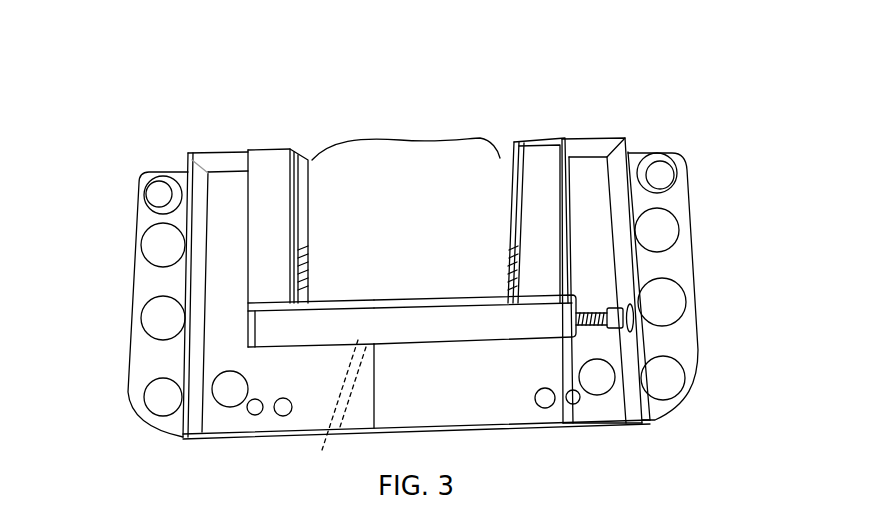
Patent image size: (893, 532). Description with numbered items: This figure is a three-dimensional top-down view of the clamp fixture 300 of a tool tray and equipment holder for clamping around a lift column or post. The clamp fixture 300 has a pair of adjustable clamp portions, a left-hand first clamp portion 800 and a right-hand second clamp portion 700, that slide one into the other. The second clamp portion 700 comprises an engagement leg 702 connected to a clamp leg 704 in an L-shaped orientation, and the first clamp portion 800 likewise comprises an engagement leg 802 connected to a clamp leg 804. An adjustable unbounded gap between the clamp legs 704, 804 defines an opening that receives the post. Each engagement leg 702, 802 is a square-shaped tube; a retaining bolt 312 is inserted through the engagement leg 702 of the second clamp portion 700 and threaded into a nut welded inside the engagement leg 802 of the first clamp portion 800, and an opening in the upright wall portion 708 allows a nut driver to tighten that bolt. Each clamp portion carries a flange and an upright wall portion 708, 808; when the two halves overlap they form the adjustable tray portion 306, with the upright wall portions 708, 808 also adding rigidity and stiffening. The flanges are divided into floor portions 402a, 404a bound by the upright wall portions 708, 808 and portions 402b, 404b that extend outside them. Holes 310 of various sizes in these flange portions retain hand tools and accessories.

The clamp fixture 300 is at (420, 82).
The tray portion 306 is at (323, 448).
The holes 310 is at (160, 400).
The bolt 312 is at (137, 208).
The flange floor portion 402a is at (600, 412).
The flange portion outside upright wall 402b is at (677, 200).
The flange floor portion 404a is at (214, 432).
The flange portion outside upright wall 404b is at (137, 343).
The second clamp portion 700 is at (503, 117).
The engagement leg 702 is at (475, 319).
The clamp leg 704 is at (538, 220).
The upright wall portion 708 is at (623, 137).
The first clamp portion 800 is at (350, 110).
The engagement leg 802 is at (362, 340).
The clamp leg 804 is at (278, 248).
The upright wall portion 808 is at (218, 157).